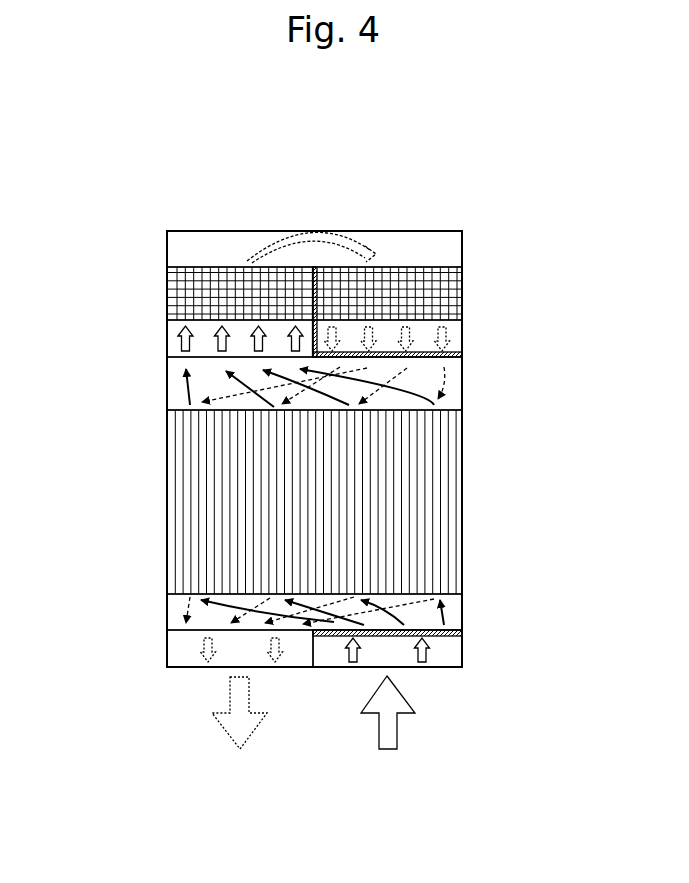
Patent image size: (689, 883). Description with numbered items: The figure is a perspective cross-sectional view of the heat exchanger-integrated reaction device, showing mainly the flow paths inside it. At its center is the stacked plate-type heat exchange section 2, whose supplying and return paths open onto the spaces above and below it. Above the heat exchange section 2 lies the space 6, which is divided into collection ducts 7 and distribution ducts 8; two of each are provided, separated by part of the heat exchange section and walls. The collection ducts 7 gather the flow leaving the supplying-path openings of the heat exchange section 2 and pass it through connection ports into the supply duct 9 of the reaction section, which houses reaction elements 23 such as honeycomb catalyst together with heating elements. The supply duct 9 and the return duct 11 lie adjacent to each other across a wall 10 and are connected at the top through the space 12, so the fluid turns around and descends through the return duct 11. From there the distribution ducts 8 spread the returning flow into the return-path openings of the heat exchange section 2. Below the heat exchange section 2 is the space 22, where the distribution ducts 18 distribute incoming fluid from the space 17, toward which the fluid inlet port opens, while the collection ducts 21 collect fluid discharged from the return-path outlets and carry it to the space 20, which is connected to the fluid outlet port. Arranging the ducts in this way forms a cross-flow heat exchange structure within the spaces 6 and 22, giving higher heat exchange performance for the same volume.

The heat exchange section 2 is at (146, 413).
The space 6 is at (482, 358).
The collection ducts 7 is at (209, 383).
The distribution ducts 8 is at (262, 385).
The supply duct 9 is at (247, 325).
The wall 10 is at (308, 285).
The return duct 11 is at (387, 326).
The space 12 is at (482, 231).
The space 17 is at (440, 646).
The distribution ducts 18 is at (217, 615).
The space 20 is at (195, 645).
The collection ducts 21 is at (254, 609).
The space 22 is at (482, 594).
The reaction elements 23 is at (245, 305).